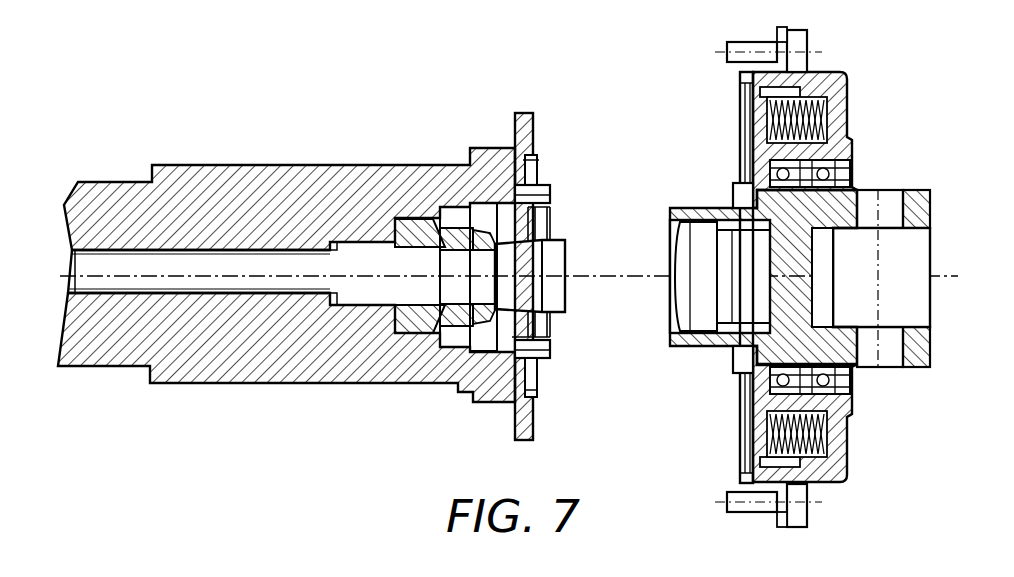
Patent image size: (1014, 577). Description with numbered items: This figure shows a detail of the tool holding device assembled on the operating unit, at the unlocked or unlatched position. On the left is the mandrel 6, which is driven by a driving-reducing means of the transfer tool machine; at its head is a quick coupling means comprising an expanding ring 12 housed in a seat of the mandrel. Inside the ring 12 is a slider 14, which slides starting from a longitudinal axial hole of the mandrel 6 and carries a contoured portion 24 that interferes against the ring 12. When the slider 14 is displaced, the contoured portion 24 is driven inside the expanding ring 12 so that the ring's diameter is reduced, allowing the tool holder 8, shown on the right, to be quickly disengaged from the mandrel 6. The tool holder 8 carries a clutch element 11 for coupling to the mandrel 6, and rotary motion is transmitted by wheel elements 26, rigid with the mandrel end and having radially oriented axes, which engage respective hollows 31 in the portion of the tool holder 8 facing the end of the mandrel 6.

The mandrel 6 is at (290, 182).
The slider 14 is at (180, 272).
The expanding ring 12 is at (405, 332).
The contoured portion 24 is at (470, 283).
The wheel elements 26 is at (550, 192).
The clutch element 11 is at (672, 258).
The hollows 31 is at (730, 192).
The tool holder 8 is at (883, 134).